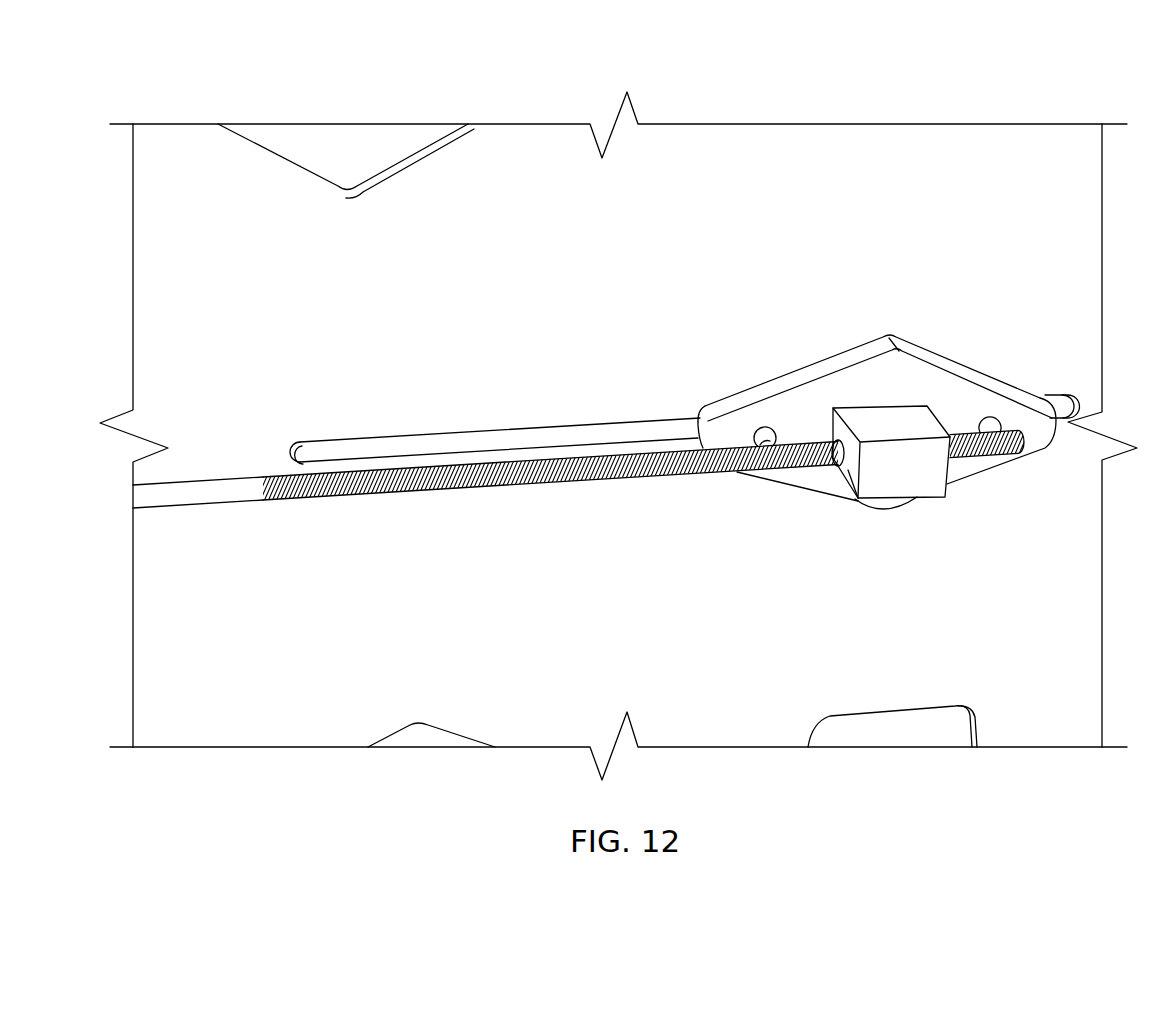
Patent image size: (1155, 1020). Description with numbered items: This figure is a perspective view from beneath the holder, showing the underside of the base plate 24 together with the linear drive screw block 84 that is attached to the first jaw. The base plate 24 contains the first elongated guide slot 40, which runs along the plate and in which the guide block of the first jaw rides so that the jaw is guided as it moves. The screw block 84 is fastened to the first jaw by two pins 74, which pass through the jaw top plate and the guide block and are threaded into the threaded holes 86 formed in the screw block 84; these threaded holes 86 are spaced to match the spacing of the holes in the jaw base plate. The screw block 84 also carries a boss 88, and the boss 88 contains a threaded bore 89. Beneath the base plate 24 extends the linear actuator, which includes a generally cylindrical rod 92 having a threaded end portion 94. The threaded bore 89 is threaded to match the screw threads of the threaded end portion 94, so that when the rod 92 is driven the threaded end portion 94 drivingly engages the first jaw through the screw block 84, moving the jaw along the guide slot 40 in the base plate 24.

The base plate 24 is at (352, 333).
The first elongated guide slot 40 is at (620, 432).
The pins 74 is at (1007, 422).
The linear drive screw block 84 is at (937, 358).
The threaded holes 86 is at (772, 427).
The boss 88 is at (912, 480).
The threaded bore 89 is at (845, 475).
The rod 92 is at (207, 508).
The threaded end portion 94 is at (525, 487).